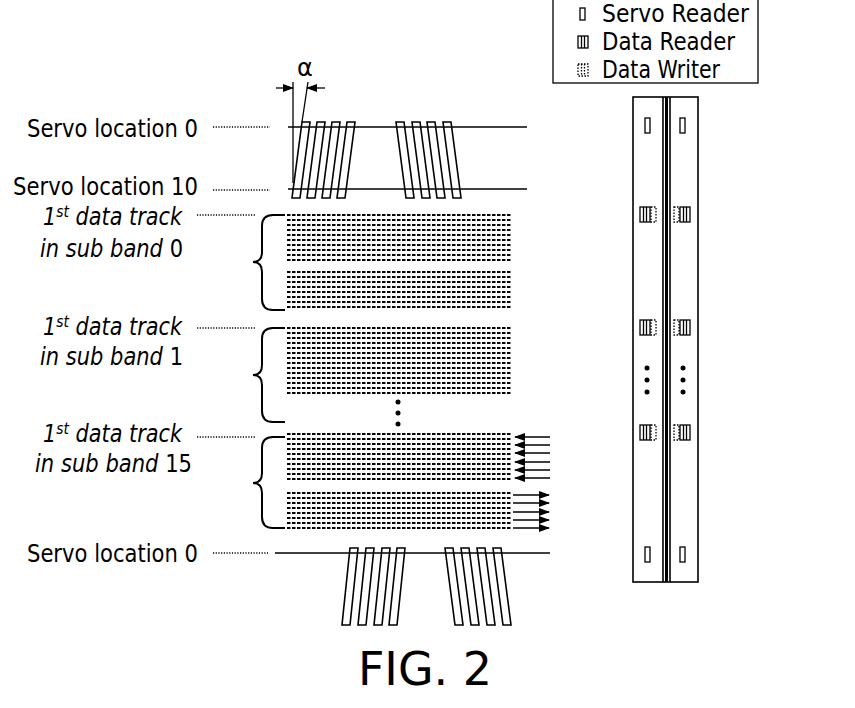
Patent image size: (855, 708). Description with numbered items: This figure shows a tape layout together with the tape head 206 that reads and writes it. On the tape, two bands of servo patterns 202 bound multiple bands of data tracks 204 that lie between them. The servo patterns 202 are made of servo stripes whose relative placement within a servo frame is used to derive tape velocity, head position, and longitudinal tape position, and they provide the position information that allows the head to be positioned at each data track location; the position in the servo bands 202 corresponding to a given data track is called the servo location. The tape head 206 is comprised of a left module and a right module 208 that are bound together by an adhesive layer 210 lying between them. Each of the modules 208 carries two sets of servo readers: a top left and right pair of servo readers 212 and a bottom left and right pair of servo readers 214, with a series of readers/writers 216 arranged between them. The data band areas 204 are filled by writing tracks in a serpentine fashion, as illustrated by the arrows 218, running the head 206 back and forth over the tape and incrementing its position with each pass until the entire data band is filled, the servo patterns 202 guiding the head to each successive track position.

The servo pattern 202 is at (465, 156).
The data track band 204 is at (544, 267).
The tape head 206 is at (679, 370).
The module 208 is at (633, 195).
The adhesive layer 210 is at (667, 583).
The top servo reader 212 is at (644, 127).
The bottom servo reader 214 is at (644, 555).
The reader/writer 216 is at (693, 215).
The arrow 218 is at (566, 453).